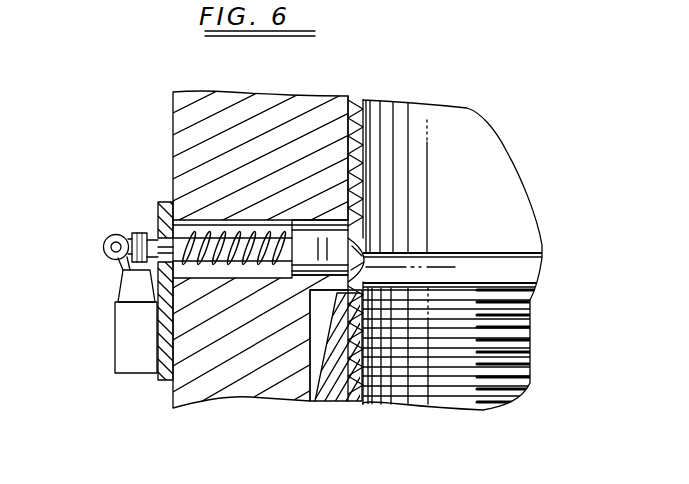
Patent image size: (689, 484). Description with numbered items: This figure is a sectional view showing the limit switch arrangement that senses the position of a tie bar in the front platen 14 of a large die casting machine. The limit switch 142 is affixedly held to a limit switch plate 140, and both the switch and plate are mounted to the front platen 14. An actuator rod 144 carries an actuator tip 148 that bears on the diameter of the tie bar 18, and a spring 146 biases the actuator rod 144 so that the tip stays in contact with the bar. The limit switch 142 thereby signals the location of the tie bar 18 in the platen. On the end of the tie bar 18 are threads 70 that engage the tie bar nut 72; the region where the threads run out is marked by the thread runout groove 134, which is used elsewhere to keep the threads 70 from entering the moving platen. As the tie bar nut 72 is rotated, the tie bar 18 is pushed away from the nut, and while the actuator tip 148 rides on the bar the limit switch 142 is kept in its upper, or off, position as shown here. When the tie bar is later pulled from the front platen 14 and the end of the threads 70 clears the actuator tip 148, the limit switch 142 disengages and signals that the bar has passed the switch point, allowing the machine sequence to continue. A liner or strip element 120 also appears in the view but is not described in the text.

The front platen 14 is at (253, 390).
The upper tie bar 18 is at (482, 132).
The threads 70 is at (518, 312).
The tie bar nut 72 is at (342, 395).
The liner strip 120 is at (356, 106).
The thread runout groove 134 is at (517, 273).
The limit switch plate 140 is at (167, 383).
The limit switch 142 is at (118, 346).
The actuator rod 144 is at (158, 238).
The spring 146 is at (248, 232).
The actuator tip 148 is at (350, 245).